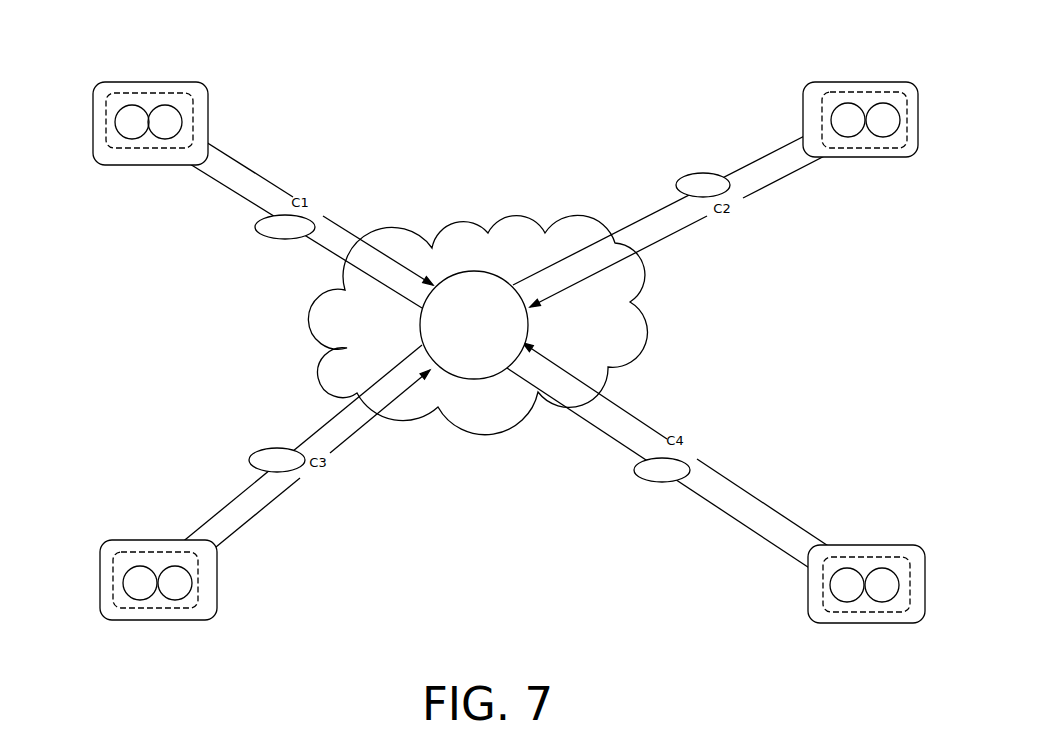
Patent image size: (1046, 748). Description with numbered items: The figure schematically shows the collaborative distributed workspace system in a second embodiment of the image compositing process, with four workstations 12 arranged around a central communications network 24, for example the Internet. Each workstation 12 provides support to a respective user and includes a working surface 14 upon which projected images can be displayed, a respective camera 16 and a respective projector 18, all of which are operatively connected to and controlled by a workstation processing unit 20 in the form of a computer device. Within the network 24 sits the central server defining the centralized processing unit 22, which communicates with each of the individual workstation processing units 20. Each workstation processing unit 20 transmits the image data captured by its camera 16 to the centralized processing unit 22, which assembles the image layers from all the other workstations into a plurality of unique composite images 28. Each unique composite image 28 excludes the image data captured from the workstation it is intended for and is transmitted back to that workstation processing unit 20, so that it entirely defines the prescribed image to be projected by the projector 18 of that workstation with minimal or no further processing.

The workstation 12 is at (502, 343).
The working surface 14 is at (207, 96).
The camera 16 is at (183, 118).
The projector 18 is at (117, 127).
The workstation processing unit 20 is at (102, 87).
The centralized processing unit 22 is at (488, 353).
The communications network 24 is at (517, 415).
The unique composite image 28 is at (266, 237).